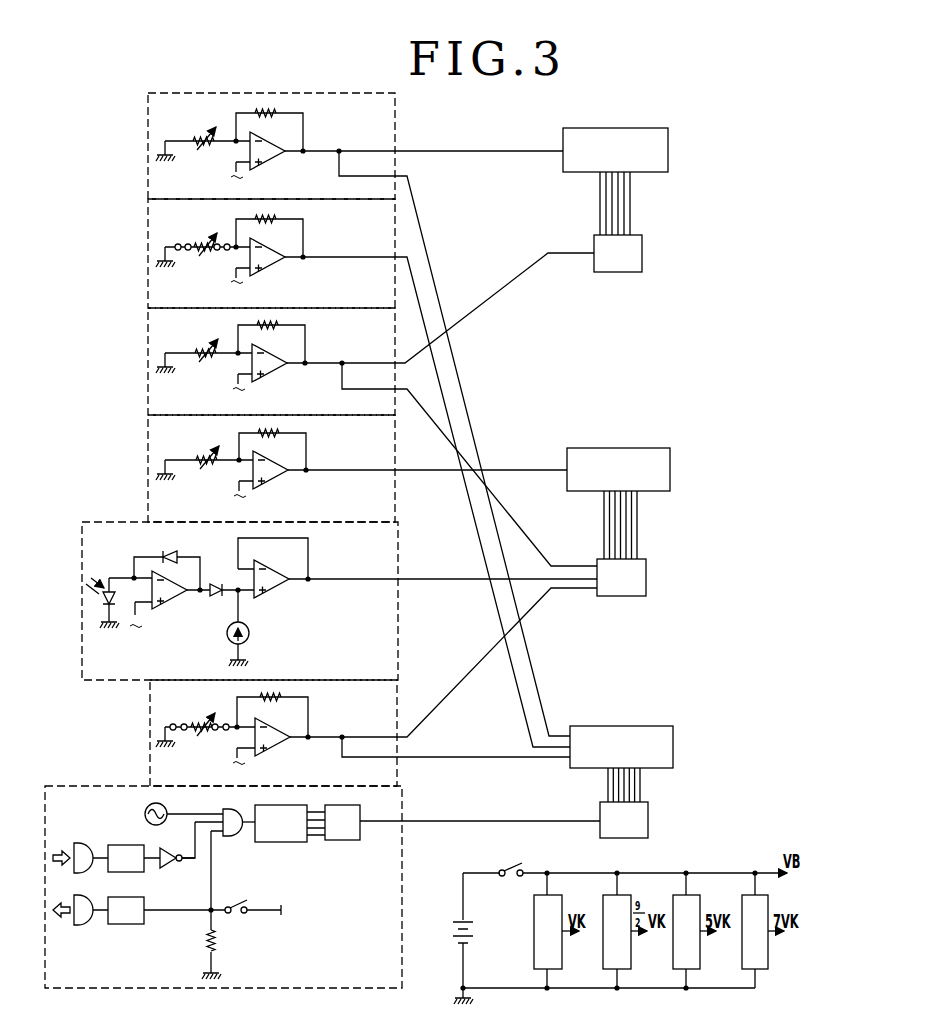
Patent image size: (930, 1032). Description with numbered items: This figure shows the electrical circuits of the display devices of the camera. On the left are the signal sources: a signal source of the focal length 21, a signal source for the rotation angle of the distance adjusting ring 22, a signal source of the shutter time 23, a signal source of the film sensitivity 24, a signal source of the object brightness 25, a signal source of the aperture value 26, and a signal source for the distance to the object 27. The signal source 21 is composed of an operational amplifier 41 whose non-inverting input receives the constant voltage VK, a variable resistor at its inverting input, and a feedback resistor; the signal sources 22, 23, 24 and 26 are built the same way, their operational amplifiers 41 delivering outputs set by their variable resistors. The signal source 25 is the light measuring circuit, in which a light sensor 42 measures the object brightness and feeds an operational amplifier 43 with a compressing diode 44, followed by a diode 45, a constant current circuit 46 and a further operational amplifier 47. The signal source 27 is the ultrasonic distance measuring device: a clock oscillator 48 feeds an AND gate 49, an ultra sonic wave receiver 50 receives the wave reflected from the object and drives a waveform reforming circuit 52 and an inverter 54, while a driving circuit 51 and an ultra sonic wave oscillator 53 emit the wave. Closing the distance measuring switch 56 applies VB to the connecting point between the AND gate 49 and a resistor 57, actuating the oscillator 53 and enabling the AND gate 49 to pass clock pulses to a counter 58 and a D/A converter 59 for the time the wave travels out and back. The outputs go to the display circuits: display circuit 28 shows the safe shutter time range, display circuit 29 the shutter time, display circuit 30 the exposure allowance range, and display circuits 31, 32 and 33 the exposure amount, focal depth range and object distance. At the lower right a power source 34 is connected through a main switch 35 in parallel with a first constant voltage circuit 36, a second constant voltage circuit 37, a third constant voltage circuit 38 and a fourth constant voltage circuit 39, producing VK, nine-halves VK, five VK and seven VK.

The signal source of the focal length 21 is at (148, 104).
The signal source for the rotation angle 22 is at (148, 211).
The signal source of the shutter time 23 is at (148, 318).
The signal source of the film sensitivity 24 is at (148, 424).
The signal source of the object brightness 25 is at (128, 522).
The signal source of the aperture value 26 is at (149, 696).
The signal source for the distance 27 is at (128, 786).
The display circuit 28 is at (615, 150).
The display circuit 29 is at (618, 253).
The display circuit 30 is at (618, 469).
The display circuit 31 is at (621, 577).
The display circuit 32 is at (621, 747).
The display circuit 33 is at (624, 820).
The power source 34 is at (473, 936).
The main switch 35 is at (511, 882).
The first constant voltage circuit 36 is at (548, 932).
The second constant voltage circuit 37 is at (617, 932).
The third constant voltage circuit 38 is at (686, 932).
The fourth constant voltage circuit 39 is at (755, 932).
The operational amplifier 41 is at (268, 159).
The light sensor 42 is at (109, 603).
The operational amplifier 43 is at (171, 601).
The compressing diode 44 is at (171, 555).
The diode 45 is at (216, 583).
The constant current circuit 46 is at (250, 633).
The operational amplifier 47 is at (271, 587).
The clock oscillator 48 is at (170, 802).
The AND gate 49 is at (232, 836).
The ultra sonic wave receiver 50 is at (79, 848).
The driving circuit 51 is at (79, 900).
The waveform reforming circuit 52 is at (126, 858).
The ultra sonic wave oscillator 53 is at (126, 910).
The inverter 54 is at (170, 865).
The distance measuring switch 56 is at (244, 913).
The resistor 57 is at (218, 944).
The counter 58 is at (281, 823).
The D/A converter 59 is at (342, 822).